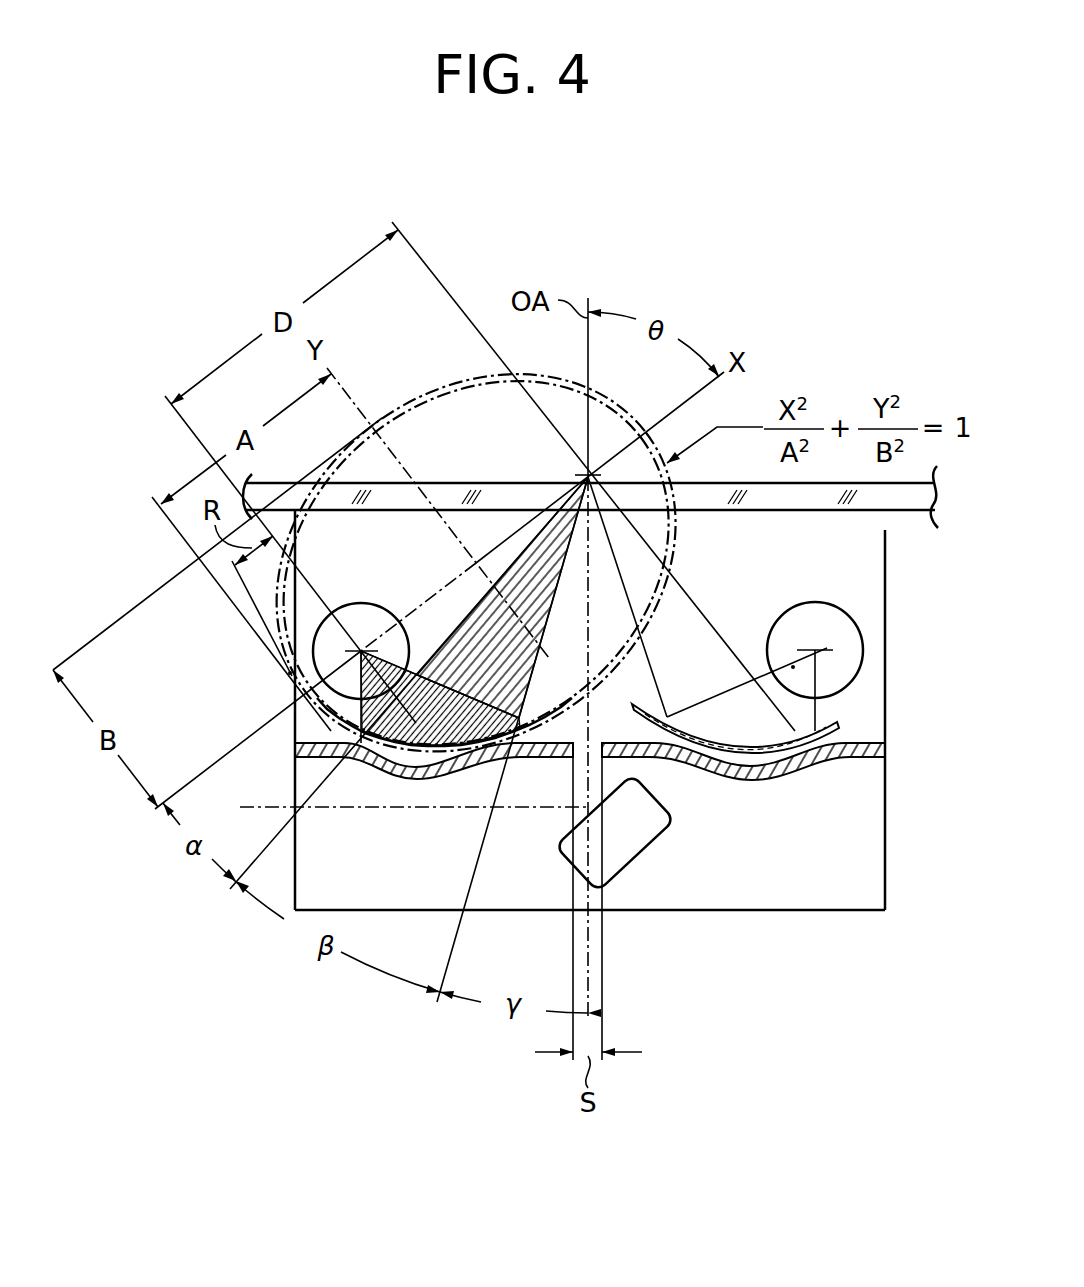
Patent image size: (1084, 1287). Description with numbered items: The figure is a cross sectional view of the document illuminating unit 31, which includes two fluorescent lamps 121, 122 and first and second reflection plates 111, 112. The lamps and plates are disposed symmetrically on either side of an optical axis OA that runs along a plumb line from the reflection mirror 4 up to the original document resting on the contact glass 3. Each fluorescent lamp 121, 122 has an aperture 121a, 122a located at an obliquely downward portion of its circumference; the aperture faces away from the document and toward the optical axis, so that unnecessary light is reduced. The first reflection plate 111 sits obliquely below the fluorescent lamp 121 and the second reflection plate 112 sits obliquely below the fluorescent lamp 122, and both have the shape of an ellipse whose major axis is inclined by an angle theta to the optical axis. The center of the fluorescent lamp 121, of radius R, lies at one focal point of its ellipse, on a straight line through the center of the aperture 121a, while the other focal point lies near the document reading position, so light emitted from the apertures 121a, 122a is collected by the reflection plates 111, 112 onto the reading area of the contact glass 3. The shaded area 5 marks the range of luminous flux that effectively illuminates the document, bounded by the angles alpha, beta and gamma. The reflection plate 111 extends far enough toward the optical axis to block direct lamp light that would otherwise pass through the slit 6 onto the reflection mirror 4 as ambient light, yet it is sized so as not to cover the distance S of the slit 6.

The document illuminating unit 31 is at (758, 290).
The contact glass 3 is at (910, 518).
The reflection mirror 4 is at (650, 856).
The shaded area 5 is at (527, 557).
The slit 6 is at (597, 742).
The first reflection plate 111 is at (432, 780).
The second reflection plate 112 is at (748, 756).
The fluorescent lamp 121 is at (363, 604).
The aperture 121a is at (290, 673).
The fluorescent lamp 122 is at (815, 603).
The aperture 122a is at (793, 667).